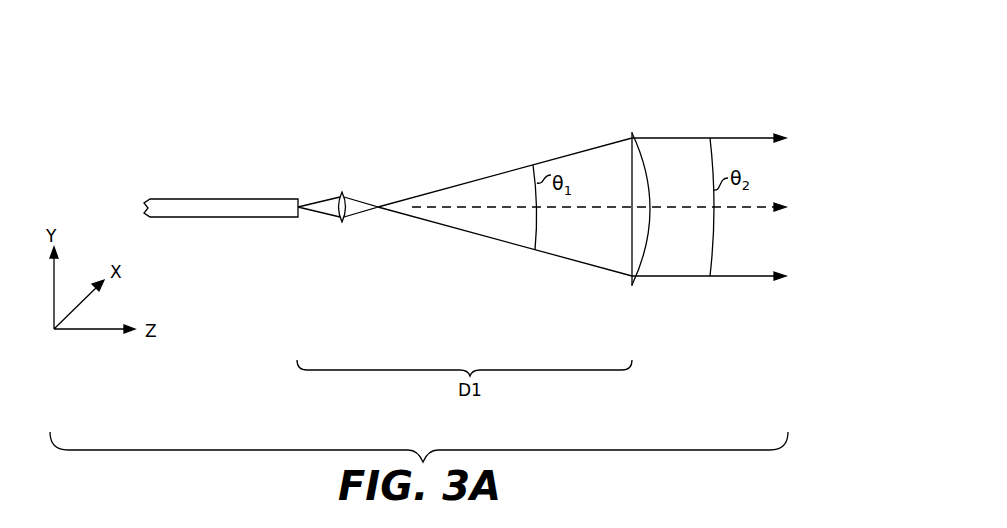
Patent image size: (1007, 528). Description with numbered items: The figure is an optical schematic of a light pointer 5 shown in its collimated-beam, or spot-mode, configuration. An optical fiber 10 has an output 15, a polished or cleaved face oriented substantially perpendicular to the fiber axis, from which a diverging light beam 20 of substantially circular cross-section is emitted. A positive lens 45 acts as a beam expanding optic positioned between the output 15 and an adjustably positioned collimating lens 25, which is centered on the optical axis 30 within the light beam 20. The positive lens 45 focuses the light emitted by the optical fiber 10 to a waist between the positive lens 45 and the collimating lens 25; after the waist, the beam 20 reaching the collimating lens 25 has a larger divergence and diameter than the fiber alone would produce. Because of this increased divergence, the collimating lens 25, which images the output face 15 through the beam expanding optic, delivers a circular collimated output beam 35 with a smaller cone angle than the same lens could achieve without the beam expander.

The light pointer 5 is at (659, 56).
The optical fiber 10 is at (252, 199).
The optical fiber output 15 is at (302, 206).
The diverging light beam 20 is at (550, 255).
The collimating lens 25 is at (632, 132).
The optical axis 30 is at (440, 210).
The collimated output beam 35 is at (742, 277).
The positive lens 45 is at (342, 222).